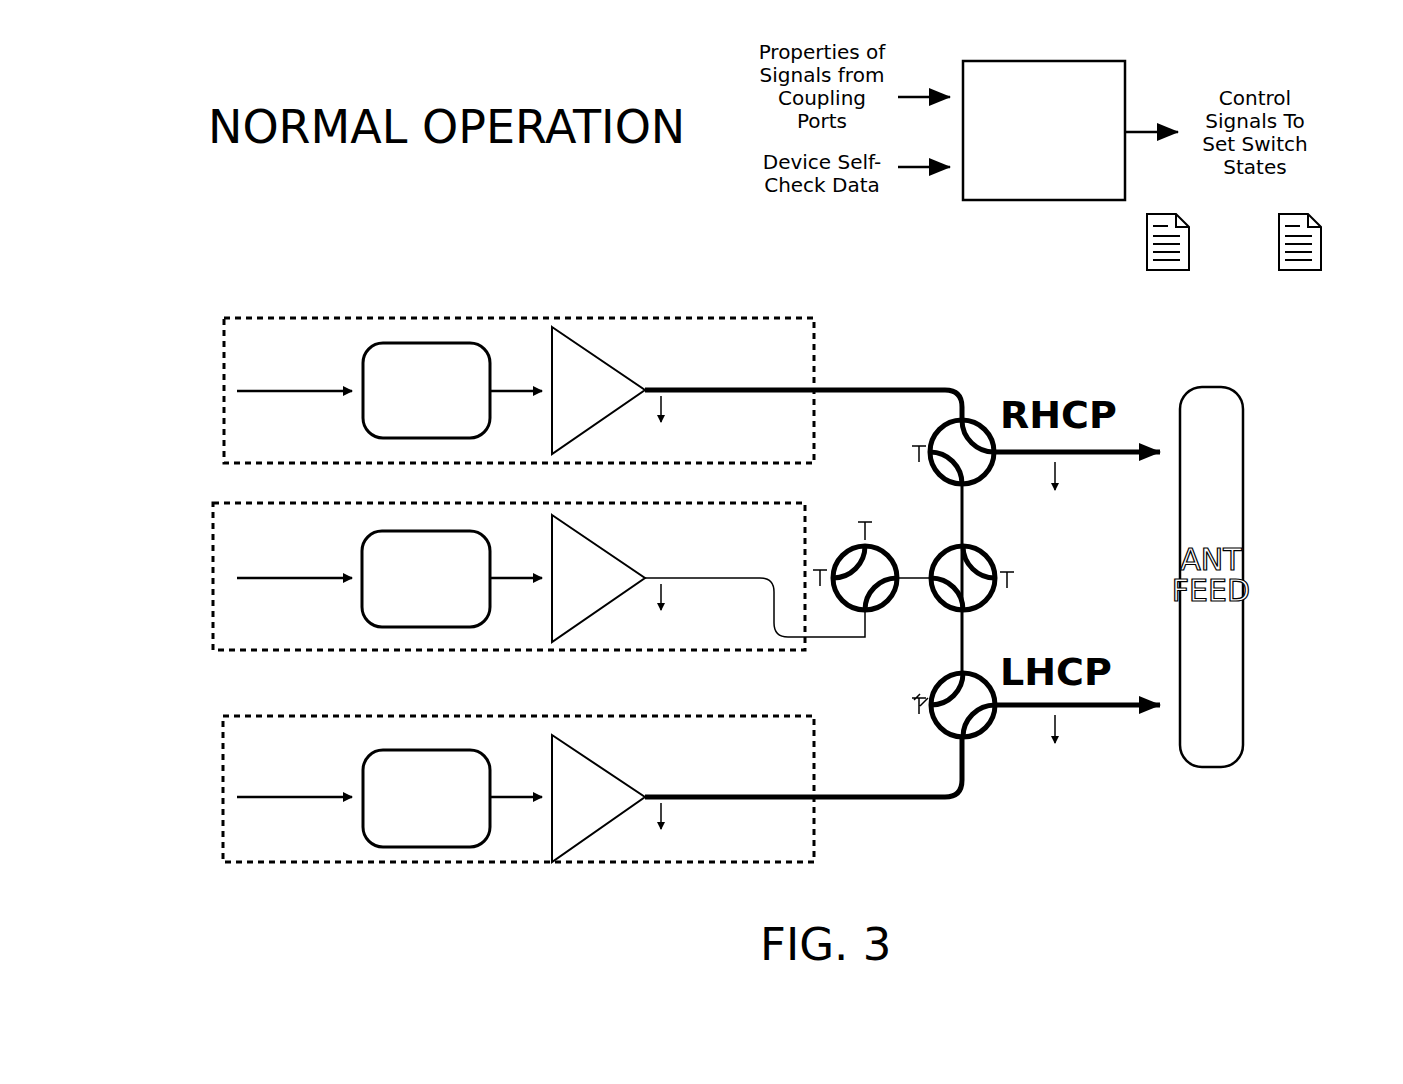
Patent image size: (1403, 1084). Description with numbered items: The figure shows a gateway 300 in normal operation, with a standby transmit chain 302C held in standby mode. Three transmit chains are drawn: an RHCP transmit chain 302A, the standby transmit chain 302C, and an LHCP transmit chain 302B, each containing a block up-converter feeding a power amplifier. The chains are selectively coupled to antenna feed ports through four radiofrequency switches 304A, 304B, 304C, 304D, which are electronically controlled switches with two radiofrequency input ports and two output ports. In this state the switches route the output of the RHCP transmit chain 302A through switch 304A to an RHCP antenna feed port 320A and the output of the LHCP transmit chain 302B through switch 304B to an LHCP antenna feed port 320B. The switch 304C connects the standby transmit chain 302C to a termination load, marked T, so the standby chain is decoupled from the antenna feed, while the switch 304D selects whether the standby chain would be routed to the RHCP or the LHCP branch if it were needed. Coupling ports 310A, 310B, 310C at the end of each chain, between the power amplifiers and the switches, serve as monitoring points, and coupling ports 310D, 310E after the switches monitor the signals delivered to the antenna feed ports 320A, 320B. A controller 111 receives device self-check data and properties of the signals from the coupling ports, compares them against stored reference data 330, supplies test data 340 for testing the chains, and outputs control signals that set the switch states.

The gateway 300 is at (170, 158).
The controller 111 is at (1049, 130).
The RHCP transmit chain 302A is at (266, 318).
The LHCP transmit chain 302B is at (220, 716).
The standby transmit chain 302C is at (216, 504).
The radiofrequency switch 304A is at (976, 424).
The radiofrequency switch 304B is at (983, 739).
The radiofrequency switch 304C is at (886, 560).
The radiofrequency switch 304D is at (990, 600).
The coupling port 310A is at (661, 396).
The coupling port 310B is at (661, 584).
The coupling port 310C is at (661, 803).
The coupling port 310D is at (1055, 462).
The coupling port 310E is at (1055, 715).
The RHCP antenna feed port 320A is at (1168, 452).
The LHCP antenna feed port 320B is at (1168, 705).
The reference data 330 is at (1322, 232).
The test data 340 is at (1190, 238).